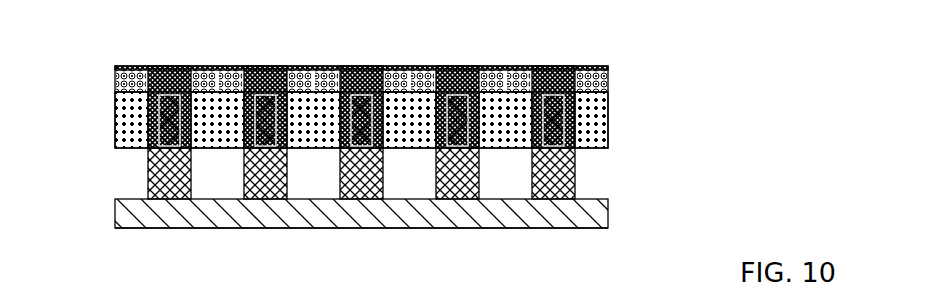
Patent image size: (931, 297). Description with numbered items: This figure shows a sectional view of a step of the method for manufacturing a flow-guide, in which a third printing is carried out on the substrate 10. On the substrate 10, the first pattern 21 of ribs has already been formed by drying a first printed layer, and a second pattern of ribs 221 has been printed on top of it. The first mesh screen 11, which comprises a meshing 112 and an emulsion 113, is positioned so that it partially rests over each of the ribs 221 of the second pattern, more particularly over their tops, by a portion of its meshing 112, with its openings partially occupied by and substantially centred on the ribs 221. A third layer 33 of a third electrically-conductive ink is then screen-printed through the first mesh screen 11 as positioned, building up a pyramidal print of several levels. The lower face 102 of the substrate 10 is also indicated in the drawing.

The substrate 10 is at (597, 213).
The bottom surface of substrate 102 is at (537, 228).
The first pattern 21 is at (593, 170).
The ribs of the second pattern 221 is at (575, 124).
The third layer 33 is at (588, 107).
The meshing 112 is at (113, 80).
The emulsion 113 is at (335, 122).
The first mesh screen 11 is at (586, 56).